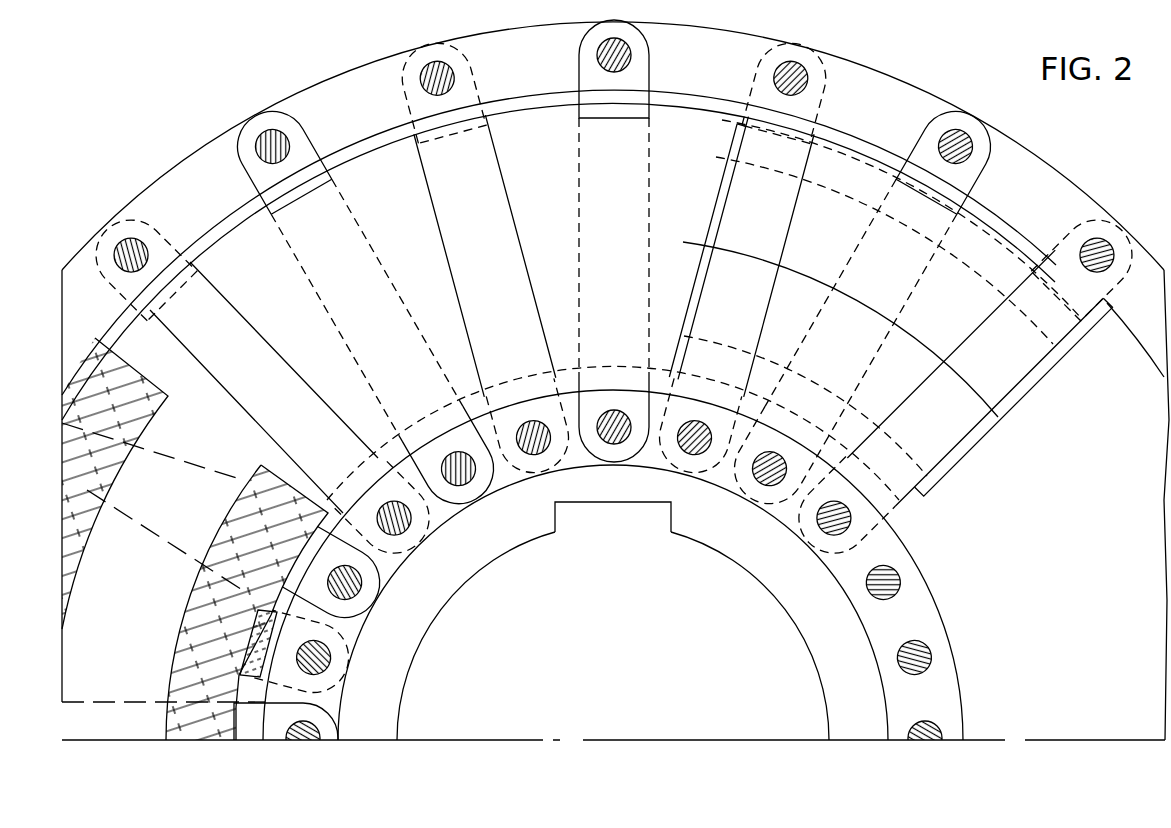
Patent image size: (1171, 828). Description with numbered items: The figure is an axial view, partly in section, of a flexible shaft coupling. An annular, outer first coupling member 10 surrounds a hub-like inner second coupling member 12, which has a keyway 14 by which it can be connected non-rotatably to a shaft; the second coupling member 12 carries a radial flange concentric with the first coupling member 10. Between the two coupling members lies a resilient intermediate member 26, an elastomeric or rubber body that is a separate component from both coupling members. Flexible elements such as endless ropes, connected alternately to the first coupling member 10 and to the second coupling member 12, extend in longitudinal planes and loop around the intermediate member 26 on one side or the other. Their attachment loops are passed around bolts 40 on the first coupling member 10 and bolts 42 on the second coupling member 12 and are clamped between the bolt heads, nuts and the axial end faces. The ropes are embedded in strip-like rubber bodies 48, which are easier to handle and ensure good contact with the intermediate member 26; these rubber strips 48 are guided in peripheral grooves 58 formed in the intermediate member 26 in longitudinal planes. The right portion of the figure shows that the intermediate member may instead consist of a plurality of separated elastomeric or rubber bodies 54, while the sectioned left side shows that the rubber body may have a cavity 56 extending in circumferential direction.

The first coupling member 10 is at (357, 68).
The second coupling member 12 is at (521, 531).
The keyway 14 is at (650, 503).
The intermediate member 26 is at (141, 383).
The bolt 40 is at (285, 128).
The bolt 42 is at (453, 484).
The rubber body 48 is at (490, 209).
The rubber body 54 is at (911, 501).
The cavity 56 is at (98, 526).
The peripheral groove 58 is at (330, 174).